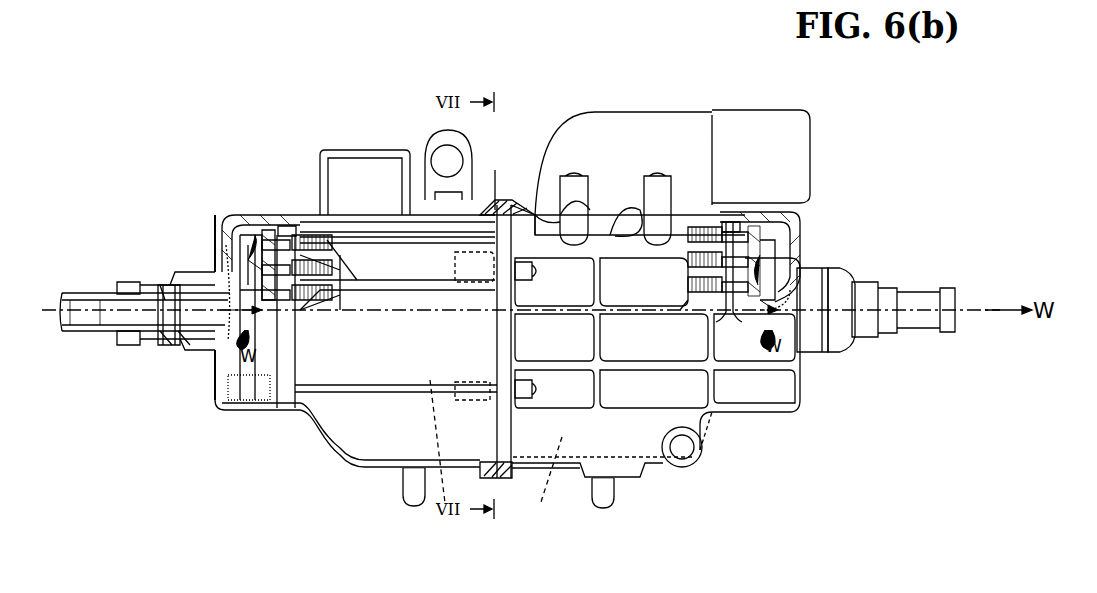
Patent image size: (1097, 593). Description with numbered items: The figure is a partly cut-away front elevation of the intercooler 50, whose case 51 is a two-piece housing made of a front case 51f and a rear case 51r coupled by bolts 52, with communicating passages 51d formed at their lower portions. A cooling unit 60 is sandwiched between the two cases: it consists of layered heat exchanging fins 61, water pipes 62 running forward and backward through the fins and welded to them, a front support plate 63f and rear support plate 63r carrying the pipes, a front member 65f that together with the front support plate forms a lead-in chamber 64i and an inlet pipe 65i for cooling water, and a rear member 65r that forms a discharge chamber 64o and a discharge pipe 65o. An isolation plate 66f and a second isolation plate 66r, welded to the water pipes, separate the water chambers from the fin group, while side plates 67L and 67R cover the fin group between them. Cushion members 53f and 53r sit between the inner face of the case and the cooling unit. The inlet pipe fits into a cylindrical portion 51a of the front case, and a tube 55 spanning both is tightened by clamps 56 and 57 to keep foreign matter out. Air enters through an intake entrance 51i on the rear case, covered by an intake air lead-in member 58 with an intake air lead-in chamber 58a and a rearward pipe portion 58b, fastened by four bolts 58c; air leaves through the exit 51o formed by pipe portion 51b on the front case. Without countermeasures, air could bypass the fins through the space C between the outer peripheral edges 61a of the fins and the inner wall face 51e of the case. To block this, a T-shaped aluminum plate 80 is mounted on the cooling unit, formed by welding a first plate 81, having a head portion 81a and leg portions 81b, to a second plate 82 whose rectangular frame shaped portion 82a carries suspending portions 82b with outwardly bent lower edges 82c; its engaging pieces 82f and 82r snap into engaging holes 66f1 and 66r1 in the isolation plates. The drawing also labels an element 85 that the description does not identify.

The intercooler 50 is at (838, 116).
The case 51 is at (224, 412).
The cylindrical portion 51a is at (163, 344).
The pipe portion 51b is at (428, 160).
The communicating passages 51d is at (512, 468).
The inner wall face 51e is at (506, 202).
The front case 51f is at (270, 410).
The intake entrance 51i is at (545, 205).
The exit 51o is at (360, 170).
The rear case 51r is at (724, 388).
The bolts 52 is at (535, 270).
The cushion member 53f is at (224, 245).
The cushion member 53r is at (786, 215).
The tube 55 is at (166, 342).
The clamp 56 is at (200, 350).
The clamp 57 is at (128, 333).
The intake air lead-in member 58 is at (545, 128).
The intake air lead-in chamber 58a is at (588, 150).
The pipe portion 58b is at (793, 110).
The bolts 58c is at (656, 174).
The cooling unit 60 is at (381, 400).
The heat exchanging fins 61 is at (318, 290).
The outer peripheral edges 61a is at (600, 255).
The water pipes 62 is at (318, 282).
The front support plate 63f is at (266, 232).
The rear support plate 63r is at (752, 230).
The lead-in chamber 64i is at (222, 262).
The discharge chamber 64o is at (776, 238).
The front member 65f is at (246, 235).
The inlet pipe 65i is at (92, 290).
The discharge pipe 65o is at (920, 292).
The rear member 65r is at (797, 232).
The isolation plate 66f is at (298, 225).
The engaging hole 66f1 is at (282, 226).
The isolation plate 66r is at (733, 322).
The engaging hole 66r1 is at (702, 222).
The side plate 67L is at (407, 374).
The side plate 67R is at (521, 507).
The plate 80 is at (478, 361).
The first plate 81 is at (470, 350).
The head portion 81a is at (492, 205).
The leg portions 81b is at (496, 462).
The second plate 82 is at (366, 236).
The rectangular frame shaped portion 82a is at (402, 240).
The suspending portions 82b is at (446, 268).
The lower edge 82c is at (408, 292).
The engaging piece 82f is at (268, 238).
The engaging piece 82r is at (731, 228).
The gasket 85 is at (314, 212).
The space C is at (493, 205).